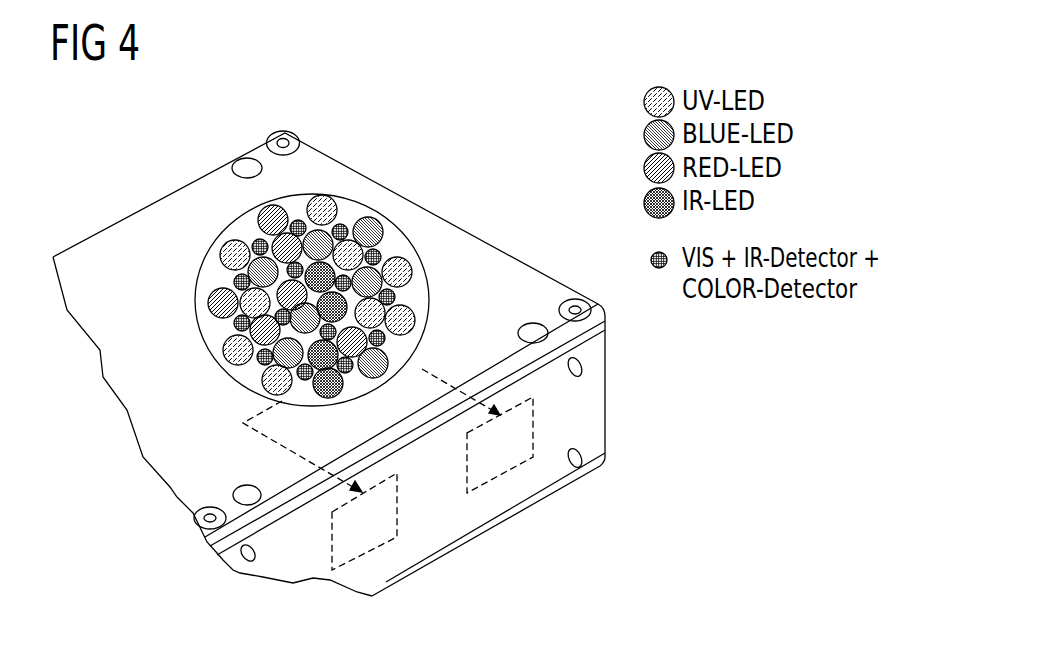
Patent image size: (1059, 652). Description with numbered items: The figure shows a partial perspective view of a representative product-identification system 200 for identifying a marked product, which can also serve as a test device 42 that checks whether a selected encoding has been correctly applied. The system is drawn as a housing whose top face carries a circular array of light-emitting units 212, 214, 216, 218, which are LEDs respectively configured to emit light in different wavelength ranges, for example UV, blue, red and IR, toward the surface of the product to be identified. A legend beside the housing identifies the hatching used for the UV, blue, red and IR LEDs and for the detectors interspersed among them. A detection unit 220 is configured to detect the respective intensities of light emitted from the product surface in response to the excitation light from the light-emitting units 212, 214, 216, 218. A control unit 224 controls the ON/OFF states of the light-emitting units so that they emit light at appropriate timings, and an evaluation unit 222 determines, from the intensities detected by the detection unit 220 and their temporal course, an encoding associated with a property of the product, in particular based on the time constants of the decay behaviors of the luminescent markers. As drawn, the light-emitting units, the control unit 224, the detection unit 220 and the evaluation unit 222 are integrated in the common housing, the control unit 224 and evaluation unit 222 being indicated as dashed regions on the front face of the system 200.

The product-identification system 200 is at (102, 151).
The light-emitting unit 212 is at (330, 195).
The light-emitting unit 214 is at (262, 216).
The light-emitting unit 216 is at (215, 301).
The light-emitting unit 218 is at (380, 215).
The detection unit 220 is at (397, 302).
The evaluation unit 222 is at (498, 466).
The control unit 224 is at (367, 545).
The test device 42 is at (637, 392).